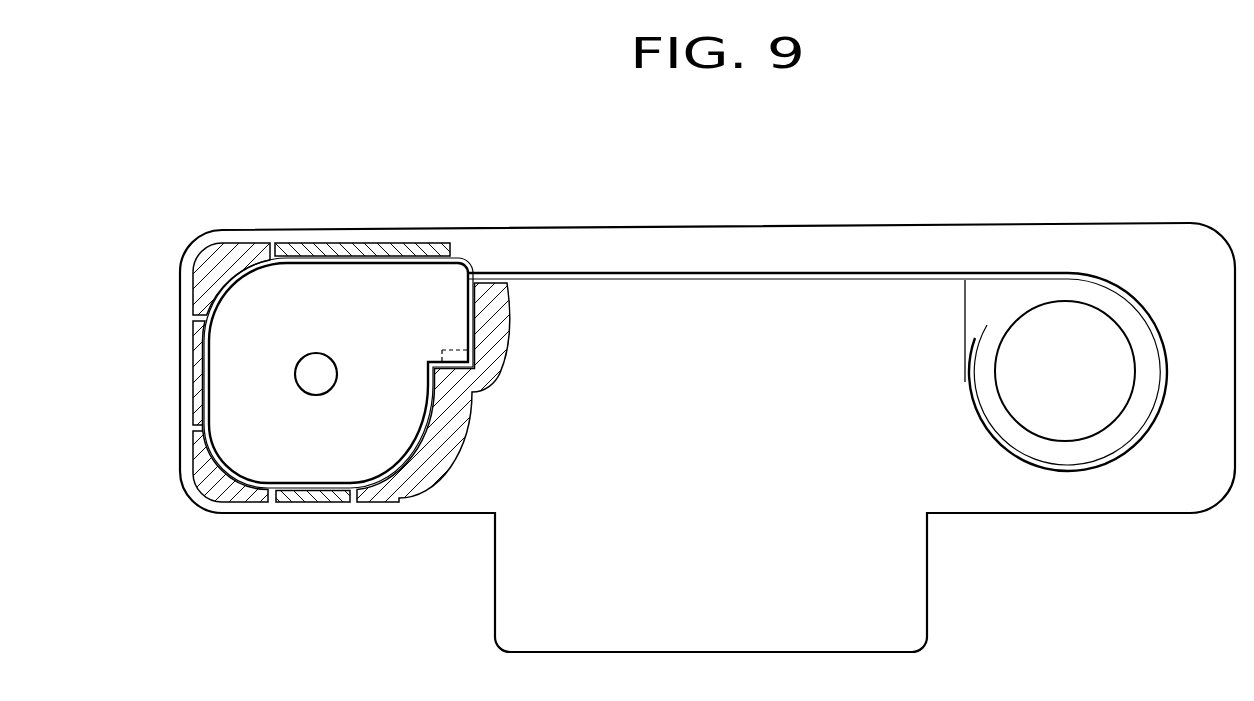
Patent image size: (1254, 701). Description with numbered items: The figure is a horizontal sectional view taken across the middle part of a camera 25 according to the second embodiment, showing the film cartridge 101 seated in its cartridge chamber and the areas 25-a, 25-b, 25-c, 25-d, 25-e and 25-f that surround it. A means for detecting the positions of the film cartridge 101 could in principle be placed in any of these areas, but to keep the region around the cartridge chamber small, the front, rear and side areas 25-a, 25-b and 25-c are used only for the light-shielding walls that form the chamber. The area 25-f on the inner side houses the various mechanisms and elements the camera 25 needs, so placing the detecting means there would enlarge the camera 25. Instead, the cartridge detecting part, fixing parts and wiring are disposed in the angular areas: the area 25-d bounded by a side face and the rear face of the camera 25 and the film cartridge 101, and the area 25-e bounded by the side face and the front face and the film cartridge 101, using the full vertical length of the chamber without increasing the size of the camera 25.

The camera 25 is at (937, 477).
The film cartridge 101 is at (455, 272).
The front area 25-a is at (363, 248).
The rear area 25-b is at (194, 333).
The side area 25-c is at (300, 498).
The angular area 25-d is at (213, 262).
The angular area 25-e is at (212, 488).
The inner side area 25-f is at (415, 486).